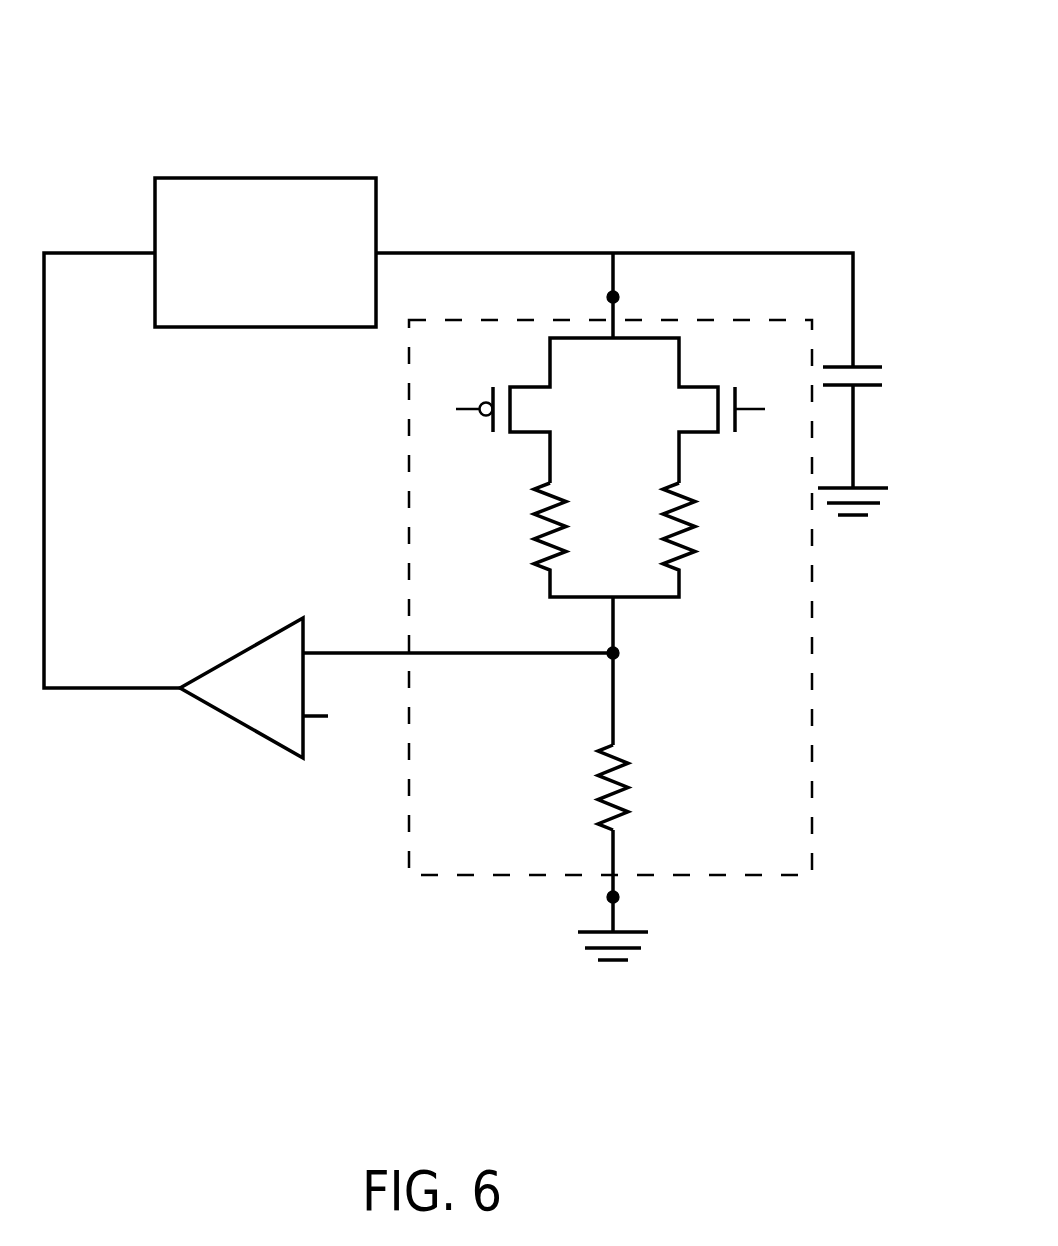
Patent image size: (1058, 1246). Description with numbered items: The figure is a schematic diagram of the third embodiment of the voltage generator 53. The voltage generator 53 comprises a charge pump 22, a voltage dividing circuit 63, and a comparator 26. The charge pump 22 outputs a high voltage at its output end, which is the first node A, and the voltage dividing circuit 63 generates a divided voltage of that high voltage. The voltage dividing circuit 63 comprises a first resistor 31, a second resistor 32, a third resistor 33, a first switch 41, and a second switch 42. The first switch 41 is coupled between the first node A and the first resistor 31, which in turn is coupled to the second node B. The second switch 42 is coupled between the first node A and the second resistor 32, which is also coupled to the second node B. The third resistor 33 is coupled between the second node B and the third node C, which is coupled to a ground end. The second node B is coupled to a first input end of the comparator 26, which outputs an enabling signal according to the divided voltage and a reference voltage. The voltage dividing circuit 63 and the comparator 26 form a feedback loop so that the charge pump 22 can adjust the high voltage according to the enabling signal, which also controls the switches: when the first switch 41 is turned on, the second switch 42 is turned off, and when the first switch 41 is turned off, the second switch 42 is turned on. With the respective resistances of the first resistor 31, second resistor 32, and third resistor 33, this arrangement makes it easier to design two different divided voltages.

The voltage generator 53 is at (740, 82).
The charge pump 22 is at (347, 178).
The comparator 26 is at (240, 652).
The voltage dividing circuit 63 is at (688, 320).
The first switch 41 is at (500, 437).
The second switch 42 is at (728, 437).
The first resistor 31 is at (528, 525).
The second resistor 32 is at (698, 525).
The third resistor 33 is at (635, 783).